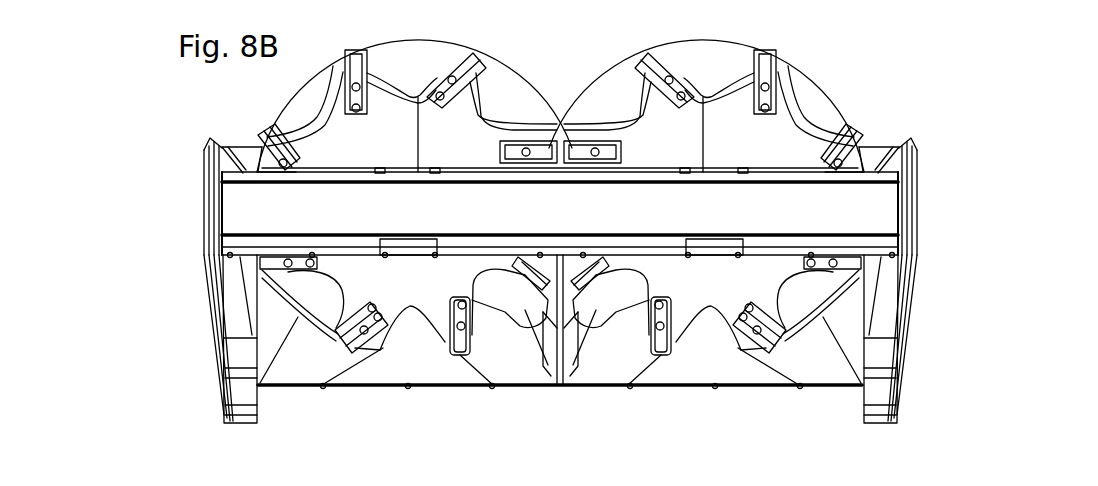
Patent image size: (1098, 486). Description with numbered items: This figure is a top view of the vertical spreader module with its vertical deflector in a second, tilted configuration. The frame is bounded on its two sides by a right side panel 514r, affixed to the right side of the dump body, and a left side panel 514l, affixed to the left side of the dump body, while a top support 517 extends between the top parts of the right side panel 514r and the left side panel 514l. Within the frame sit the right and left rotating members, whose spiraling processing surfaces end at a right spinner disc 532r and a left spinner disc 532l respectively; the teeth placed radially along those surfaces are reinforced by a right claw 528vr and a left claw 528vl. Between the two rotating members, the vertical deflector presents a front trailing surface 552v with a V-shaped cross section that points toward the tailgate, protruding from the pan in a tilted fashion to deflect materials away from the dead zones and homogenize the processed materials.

The right spinner disc 532r is at (273, 117).
The left spinner disc 532l is at (838, 98).
The top support 517 is at (813, 170).
The right side panel 514r is at (203, 290).
The left side panel 514l is at (908, 282).
The right claw 528vr is at (368, 315).
The left claw 528vl is at (783, 337).
The front trailing surface 552v is at (560, 323).